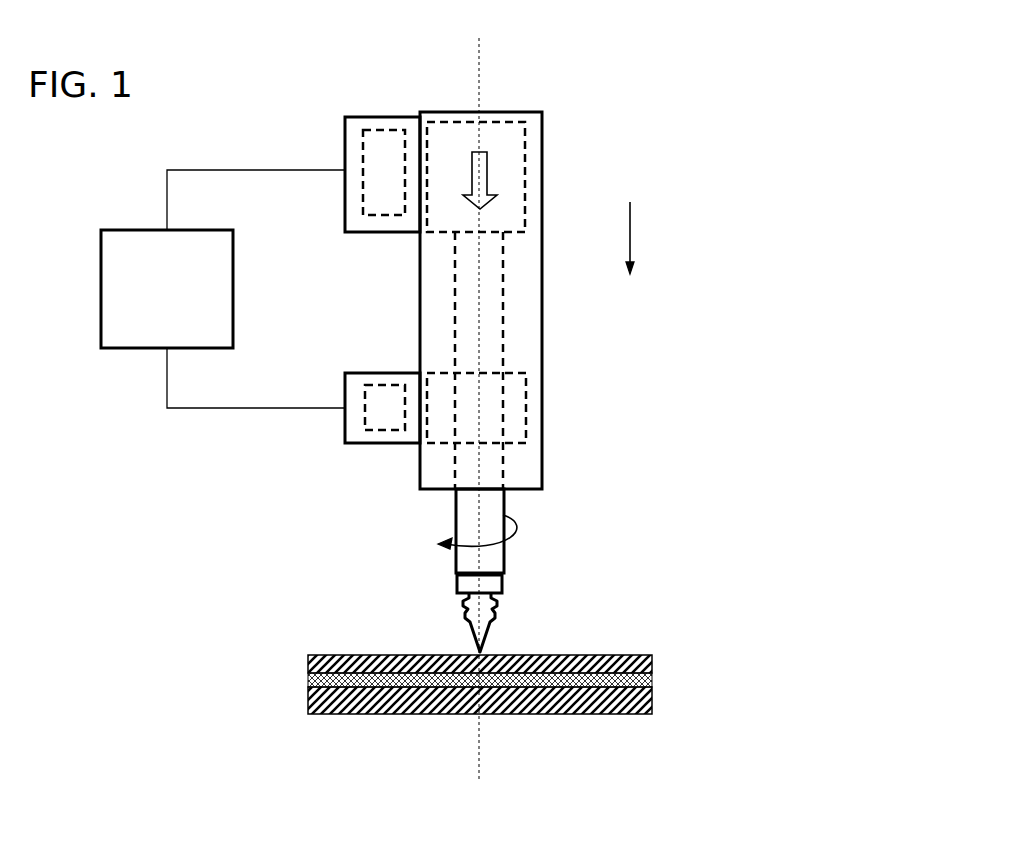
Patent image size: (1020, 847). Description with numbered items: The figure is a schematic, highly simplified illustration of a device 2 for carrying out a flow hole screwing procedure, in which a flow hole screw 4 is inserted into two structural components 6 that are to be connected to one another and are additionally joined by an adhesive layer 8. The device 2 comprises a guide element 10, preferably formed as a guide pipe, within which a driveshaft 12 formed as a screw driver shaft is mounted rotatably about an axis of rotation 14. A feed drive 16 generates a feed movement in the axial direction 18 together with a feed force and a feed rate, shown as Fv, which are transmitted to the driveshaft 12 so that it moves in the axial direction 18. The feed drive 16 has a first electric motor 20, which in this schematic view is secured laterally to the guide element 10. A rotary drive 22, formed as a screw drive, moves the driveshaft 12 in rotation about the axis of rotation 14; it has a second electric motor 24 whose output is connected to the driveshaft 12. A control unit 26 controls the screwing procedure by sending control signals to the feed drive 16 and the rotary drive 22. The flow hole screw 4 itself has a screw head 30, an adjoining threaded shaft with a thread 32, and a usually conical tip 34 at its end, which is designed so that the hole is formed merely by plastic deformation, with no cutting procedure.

The device 2 is at (612, 115).
The flow hole screw 4 is at (503, 615).
The structural component 6 is at (652, 660).
The adhesive layer 8 is at (318, 683).
The guide element 10 is at (543, 292).
The driveshaft 12 is at (507, 517).
The axis of rotation 14 is at (479, 46).
The feed drive 16 is at (353, 117).
The axial direction 18 is at (632, 215).
The first electric motor 20 is at (395, 130).
The rotary drive 22 is at (345, 443).
The second electric motor 24 is at (365, 408).
The control unit 26 is at (121, 230).
The screw head 30 is at (457, 583).
The thread 32 is at (465, 605).
The tip 34 is at (490, 640).
The feed force and feed rate Fv is at (479, 170).